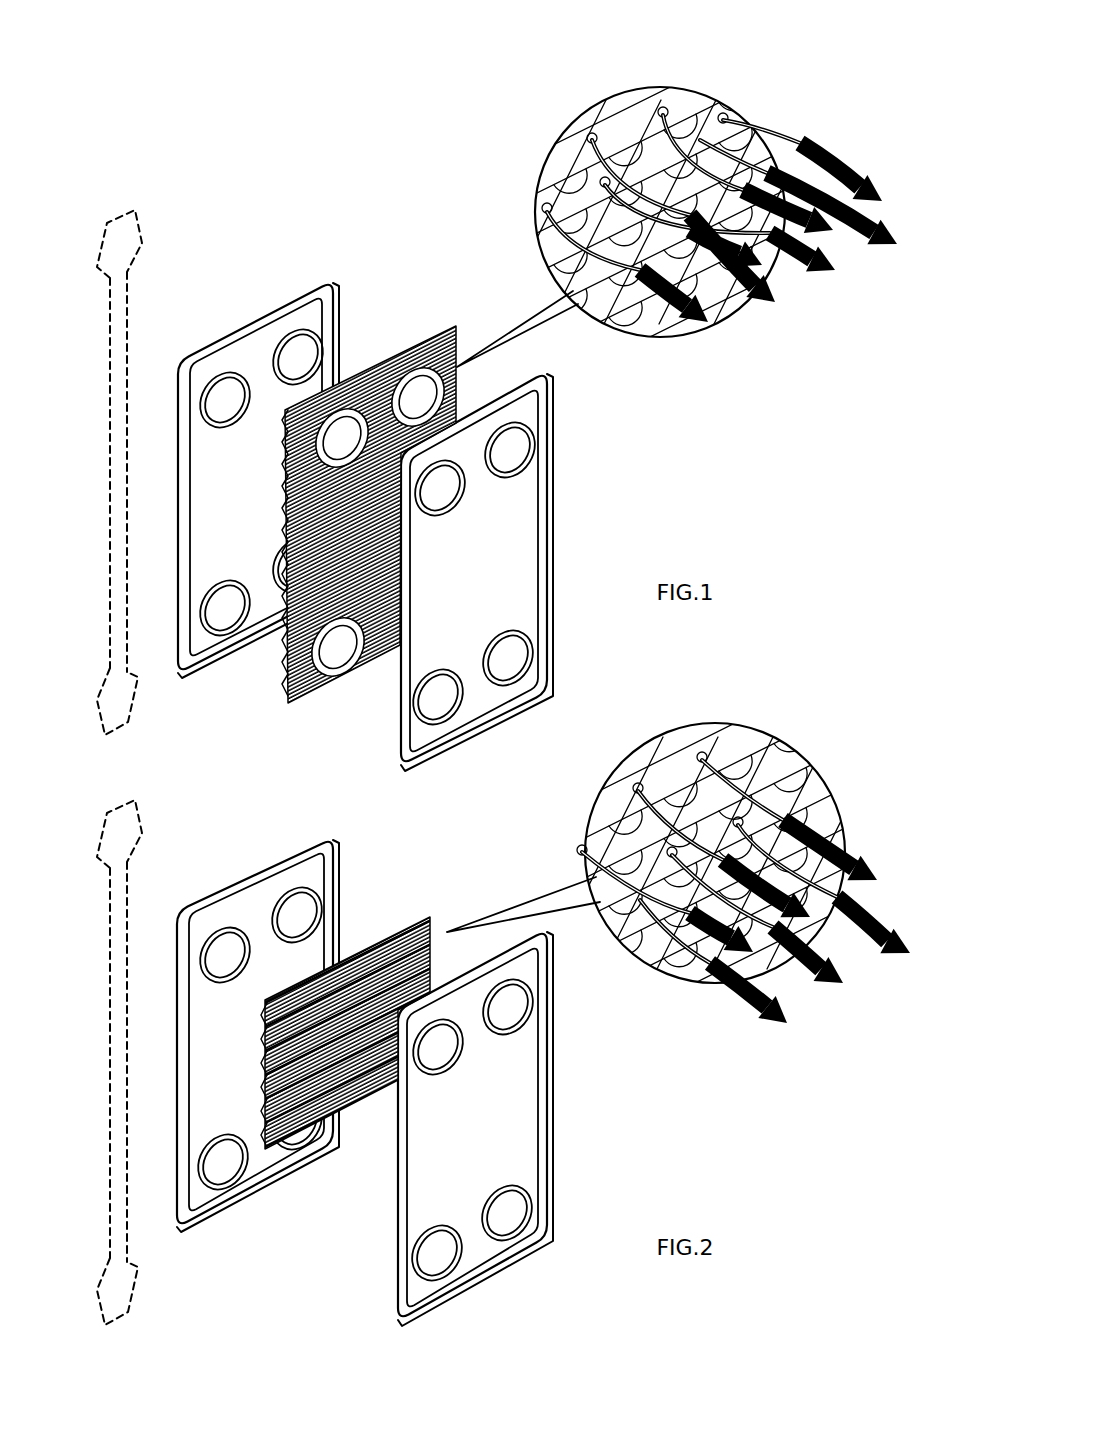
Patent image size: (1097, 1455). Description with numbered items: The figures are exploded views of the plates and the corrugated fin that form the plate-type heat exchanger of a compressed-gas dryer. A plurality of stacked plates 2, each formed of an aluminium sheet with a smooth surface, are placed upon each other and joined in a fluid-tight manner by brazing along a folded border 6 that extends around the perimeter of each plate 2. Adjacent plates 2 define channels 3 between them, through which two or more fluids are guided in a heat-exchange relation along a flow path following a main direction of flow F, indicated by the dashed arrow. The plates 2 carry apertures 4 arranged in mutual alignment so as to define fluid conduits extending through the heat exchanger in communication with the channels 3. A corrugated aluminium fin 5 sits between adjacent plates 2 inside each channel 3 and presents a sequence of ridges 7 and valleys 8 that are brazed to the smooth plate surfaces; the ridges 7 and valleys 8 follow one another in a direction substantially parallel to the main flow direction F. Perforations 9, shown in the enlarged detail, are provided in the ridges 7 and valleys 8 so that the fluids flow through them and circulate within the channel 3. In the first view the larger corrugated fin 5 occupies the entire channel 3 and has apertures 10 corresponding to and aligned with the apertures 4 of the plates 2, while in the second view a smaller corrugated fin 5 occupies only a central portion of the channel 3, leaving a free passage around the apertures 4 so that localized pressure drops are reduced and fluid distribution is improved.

In FIG. 1, the plate 2 is at (218, 496).
In FIG. 2, the plate 2 is at (218, 1062).
In FIG. 1, the channel 3 is at (240, 688).
In FIG. 2, the channel 3 is at (320, 1238).
In FIG. 1, the aperture 4 is at (212, 402).
In FIG. 2, the aperture 4 is at (210, 1170).
In FIG. 1, the corrugated fin 5 is at (405, 318).
In FIG. 2, the corrugated fin 5 is at (385, 913).
In FIG. 1, the folded border 6 is at (262, 318).
In FIG. 2, the folded border 6 is at (225, 885).
In FIG. 1, the ridge 7 is at (735, 97).
In FIG. 2, the ridge 7 is at (762, 745).
In FIG. 1, the valley 8 is at (687, 95).
In FIG. 2, the valley 8 is at (657, 760).
In FIG. 1, the perforation 9 is at (660, 95).
In FIG. 2, the perforation 9 is at (772, 750).
In FIG. 1, the aperture 10 is at (458, 378).
In FIG. 1, the main direction of flow F is at (110, 412).
In FIG. 2, the main direction of flow F is at (110, 1010).